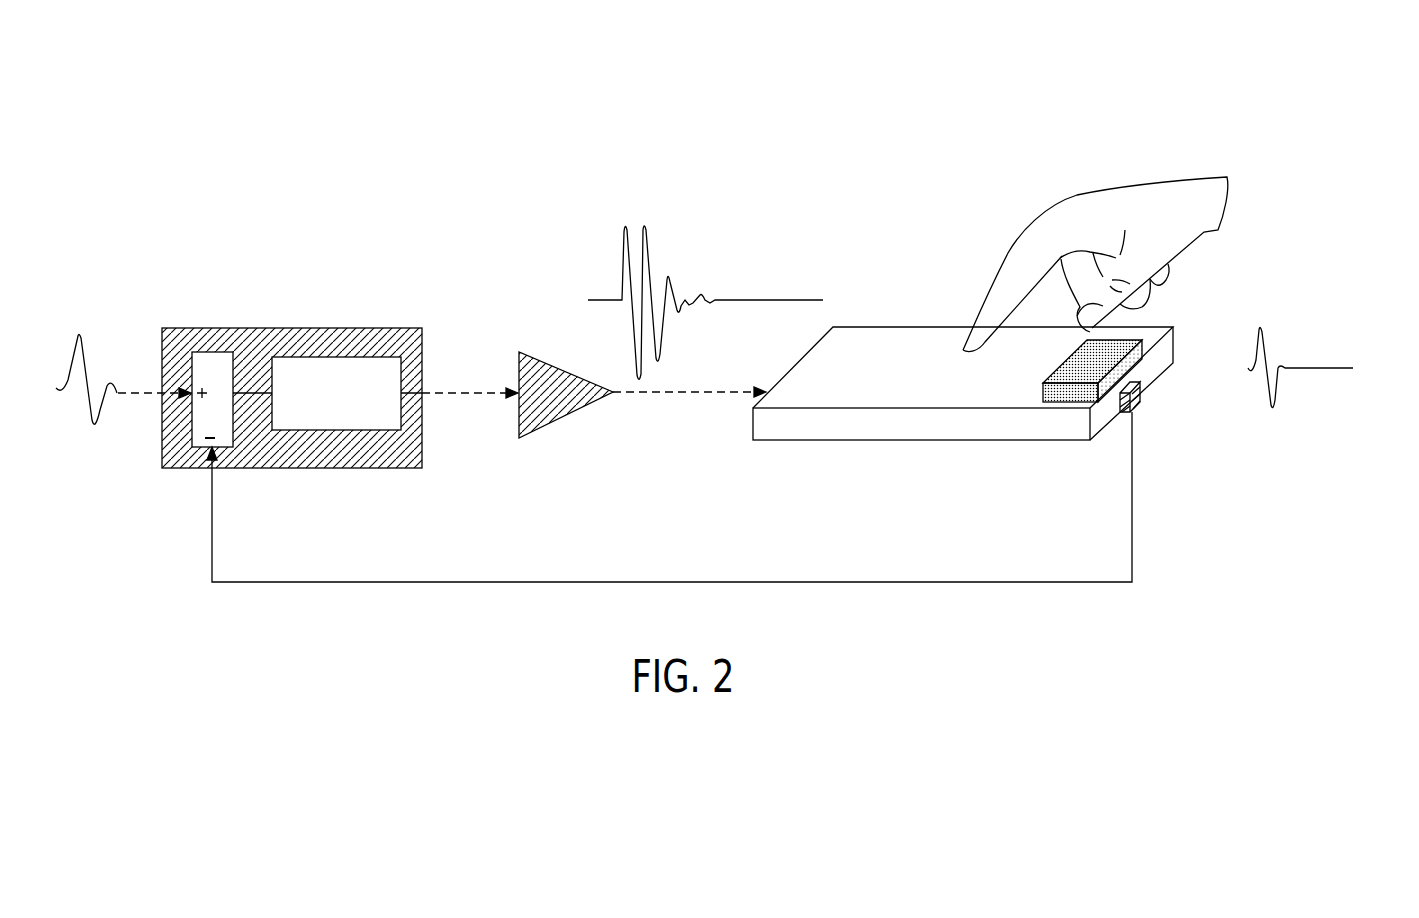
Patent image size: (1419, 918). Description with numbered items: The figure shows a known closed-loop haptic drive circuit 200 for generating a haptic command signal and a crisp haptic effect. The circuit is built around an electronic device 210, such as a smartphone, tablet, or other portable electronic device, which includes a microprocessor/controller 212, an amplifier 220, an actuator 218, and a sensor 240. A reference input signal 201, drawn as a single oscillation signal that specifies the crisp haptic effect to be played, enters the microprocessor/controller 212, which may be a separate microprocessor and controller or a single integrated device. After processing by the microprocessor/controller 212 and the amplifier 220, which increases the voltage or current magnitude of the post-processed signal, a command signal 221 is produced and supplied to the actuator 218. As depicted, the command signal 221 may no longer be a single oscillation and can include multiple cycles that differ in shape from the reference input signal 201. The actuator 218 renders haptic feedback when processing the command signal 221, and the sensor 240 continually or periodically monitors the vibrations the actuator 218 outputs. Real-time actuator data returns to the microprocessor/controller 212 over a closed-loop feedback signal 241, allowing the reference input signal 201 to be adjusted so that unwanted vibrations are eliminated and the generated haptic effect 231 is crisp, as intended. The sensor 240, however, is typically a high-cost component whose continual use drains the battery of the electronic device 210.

The closed-loop haptic drive circuit 200 is at (585, 127).
The reference input signal 201 is at (79, 334).
The microprocessor/controller 212 is at (345, 468).
The amplifier 220 is at (562, 417).
The command signal 221 is at (743, 300).
The electronic device 210 is at (950, 433).
The actuator 218 is at (1087, 362).
The sensor 240 is at (1138, 397).
The closed-loop feedback signal 241 is at (676, 581).
The generated haptic effect 231 is at (1318, 368).